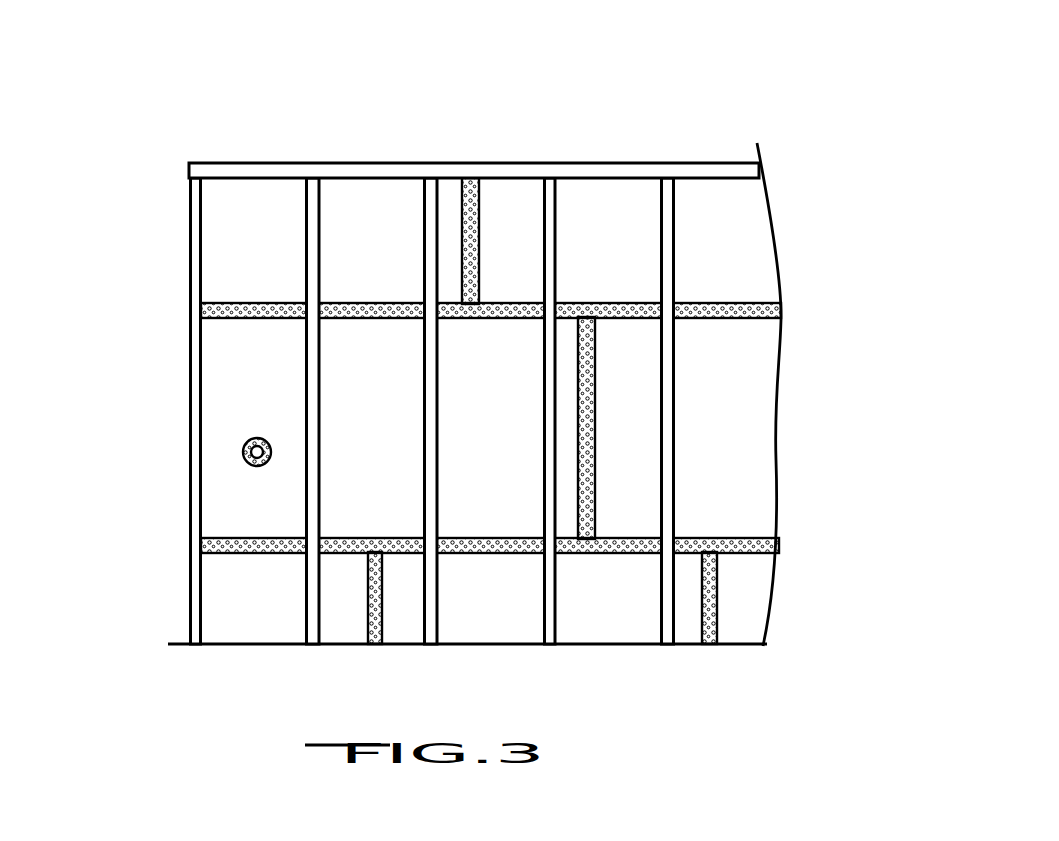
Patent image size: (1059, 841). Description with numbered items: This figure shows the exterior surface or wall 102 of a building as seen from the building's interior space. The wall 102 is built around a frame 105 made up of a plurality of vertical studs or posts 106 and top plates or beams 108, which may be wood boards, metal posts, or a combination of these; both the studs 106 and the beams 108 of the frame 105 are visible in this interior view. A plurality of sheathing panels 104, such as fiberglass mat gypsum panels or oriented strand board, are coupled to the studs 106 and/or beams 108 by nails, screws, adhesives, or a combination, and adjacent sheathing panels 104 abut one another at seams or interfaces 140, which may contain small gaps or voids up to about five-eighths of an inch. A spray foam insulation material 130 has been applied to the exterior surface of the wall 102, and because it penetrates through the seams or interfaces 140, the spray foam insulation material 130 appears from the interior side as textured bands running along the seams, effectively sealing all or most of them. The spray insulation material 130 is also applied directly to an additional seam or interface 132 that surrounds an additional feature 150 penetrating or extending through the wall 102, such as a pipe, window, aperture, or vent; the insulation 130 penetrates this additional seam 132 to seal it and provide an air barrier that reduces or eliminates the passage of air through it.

The exterior surface or wall 102 is at (740, 412).
The sheathing panels 104 is at (252, 207).
The frame 105 is at (158, 170).
The vertical studs or posts 106 is at (190, 345).
The top plates or beams 108 is at (453, 171).
The spray foam insulation material 130 is at (431, 387).
The additional seam or interface 132 is at (257, 437).
The seams or interfaces 140 is at (358, 295).
The additional feature 150 is at (177, 421).